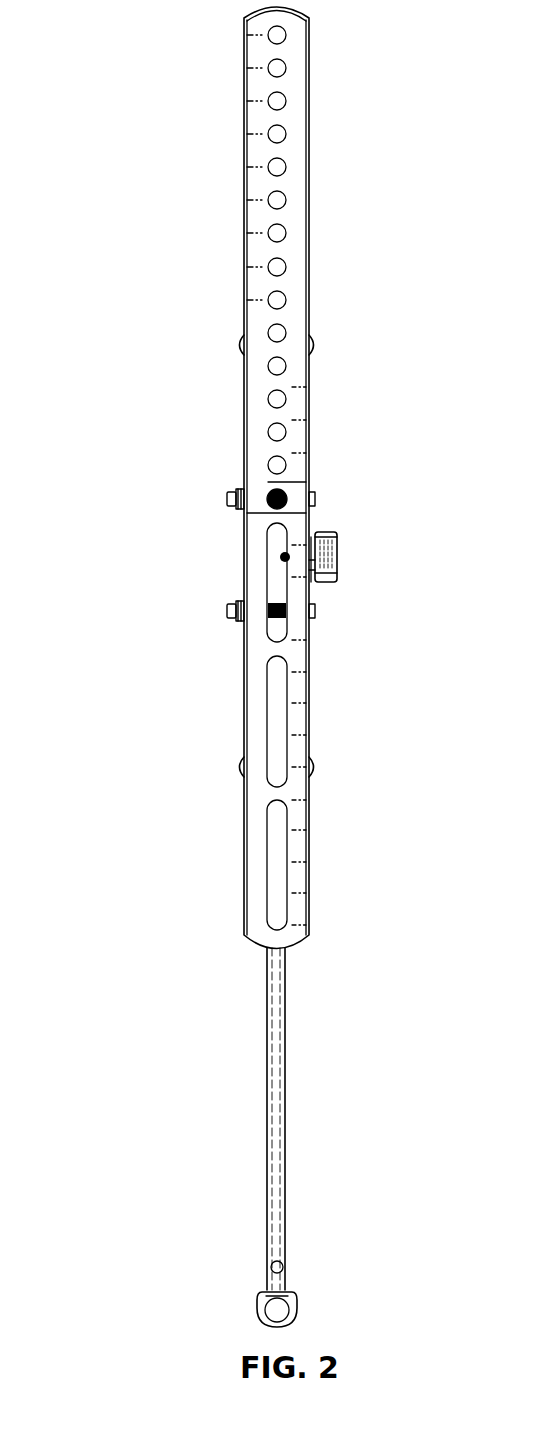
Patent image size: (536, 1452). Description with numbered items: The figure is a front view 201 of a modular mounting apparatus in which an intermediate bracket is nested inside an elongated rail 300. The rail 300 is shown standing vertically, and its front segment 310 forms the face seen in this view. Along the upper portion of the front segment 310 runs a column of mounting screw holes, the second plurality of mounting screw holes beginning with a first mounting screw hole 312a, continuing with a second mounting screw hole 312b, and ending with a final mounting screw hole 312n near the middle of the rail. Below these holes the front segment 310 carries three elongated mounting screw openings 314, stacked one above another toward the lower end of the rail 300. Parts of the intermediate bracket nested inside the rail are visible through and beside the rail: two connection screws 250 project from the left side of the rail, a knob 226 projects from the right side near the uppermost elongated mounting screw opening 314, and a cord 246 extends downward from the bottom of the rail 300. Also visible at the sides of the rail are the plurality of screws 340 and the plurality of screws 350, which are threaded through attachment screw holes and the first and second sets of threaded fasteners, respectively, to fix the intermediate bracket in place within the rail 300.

The front view 201 is at (118, 88).
The rail 300 is at (310, 126).
The front segment 310 is at (273, 267).
The mounting screw hole 312a is at (266, 44).
The mounting screw hole 312b is at (267, 77).
The mounting screw hole 312n is at (264, 484).
The plurality of screws 340 is at (316, 346).
The plurality of screws 350 is at (238, 346).
The elongated mounting screw opening 314 is at (288, 630).
The connection screw 250 is at (316, 502).
The knob 226 is at (338, 576).
The cord 246 is at (285, 1054).